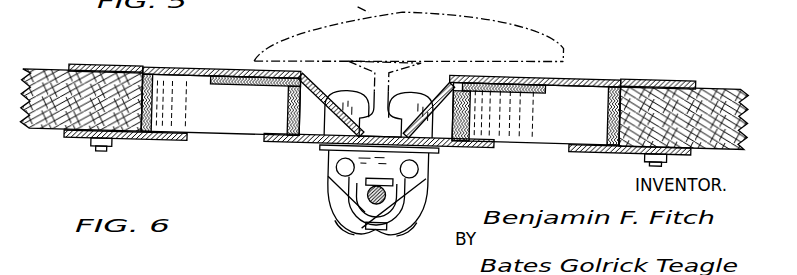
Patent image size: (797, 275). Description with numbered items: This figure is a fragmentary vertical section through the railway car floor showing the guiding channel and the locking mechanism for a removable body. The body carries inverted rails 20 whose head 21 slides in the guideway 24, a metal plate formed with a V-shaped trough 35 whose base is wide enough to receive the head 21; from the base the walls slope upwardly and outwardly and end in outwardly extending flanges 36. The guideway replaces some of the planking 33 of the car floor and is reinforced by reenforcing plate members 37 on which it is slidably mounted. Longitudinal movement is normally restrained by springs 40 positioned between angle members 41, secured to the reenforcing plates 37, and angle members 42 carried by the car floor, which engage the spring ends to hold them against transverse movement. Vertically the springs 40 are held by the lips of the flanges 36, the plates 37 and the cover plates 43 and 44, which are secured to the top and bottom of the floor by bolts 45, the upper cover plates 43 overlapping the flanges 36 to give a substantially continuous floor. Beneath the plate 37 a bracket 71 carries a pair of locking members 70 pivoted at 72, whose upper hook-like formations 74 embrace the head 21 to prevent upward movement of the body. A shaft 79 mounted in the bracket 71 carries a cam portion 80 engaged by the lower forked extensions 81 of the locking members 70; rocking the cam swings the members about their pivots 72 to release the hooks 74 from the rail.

The inverted rail 20 is at (381, 54).
The rail head 21 is at (380, 114).
The guideway 24 is at (307, 80).
The planking 33 is at (37, 69).
The V-shaped trough 35 is at (423, 84).
The outwardly extending flange 36 is at (206, 66).
The reenforcing plate 37 is at (441, 142).
The spring 40 is at (380, 109).
The angle member 41 is at (300, 138).
The angle member 42 is at (142, 142).
The upper cover plate 43 is at (147, 65).
The lower cover plate 44 is at (127, 140).
The bolt 45 is at (101, 150).
The locking member 70 is at (331, 148).
The bracket 71 is at (371, 179).
The pivot 72 is at (430, 187).
The hook-like formation 74 is at (350, 91).
The shaft 79 is at (360, 196).
The cam portion 80 is at (348, 222).
The forked extension 81 is at (355, 229).